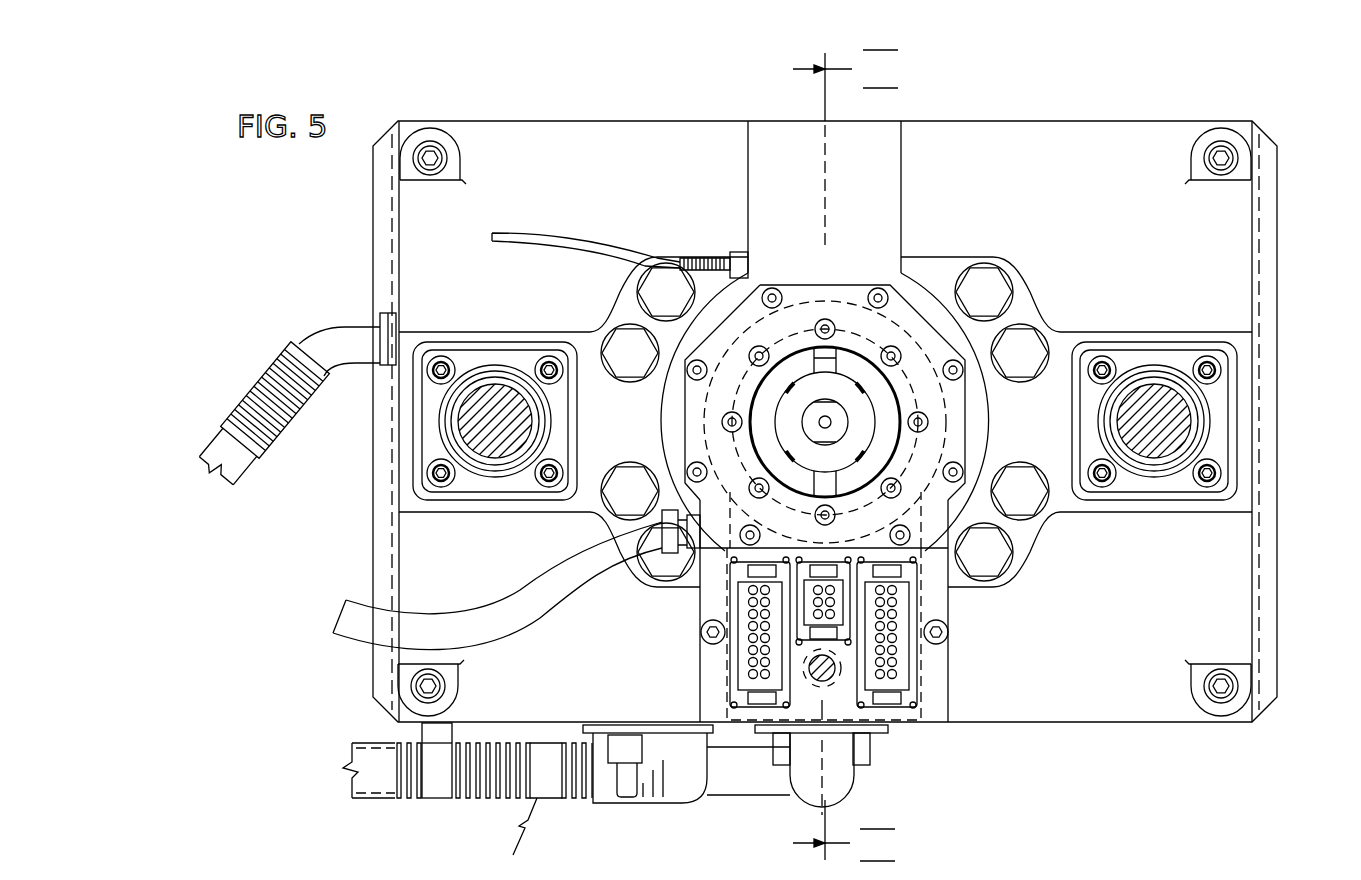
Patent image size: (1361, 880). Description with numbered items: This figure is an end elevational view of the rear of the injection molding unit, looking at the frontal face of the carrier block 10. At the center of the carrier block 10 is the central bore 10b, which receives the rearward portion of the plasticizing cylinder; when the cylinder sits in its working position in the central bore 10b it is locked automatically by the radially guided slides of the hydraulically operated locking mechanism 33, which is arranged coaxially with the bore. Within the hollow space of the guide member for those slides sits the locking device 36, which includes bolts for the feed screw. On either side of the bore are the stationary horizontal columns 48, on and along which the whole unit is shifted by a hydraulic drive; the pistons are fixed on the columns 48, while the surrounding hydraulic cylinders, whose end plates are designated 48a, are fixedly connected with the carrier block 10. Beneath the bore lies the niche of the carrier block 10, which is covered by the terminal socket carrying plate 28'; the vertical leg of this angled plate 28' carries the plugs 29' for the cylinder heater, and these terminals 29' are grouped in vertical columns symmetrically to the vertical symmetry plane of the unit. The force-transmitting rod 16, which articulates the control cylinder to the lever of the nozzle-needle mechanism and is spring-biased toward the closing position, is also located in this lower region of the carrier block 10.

The carrier block 10 is at (1121, 238).
The central bore 10b is at (760, 437).
The force-transmitting rod 16 is at (833, 681).
The terminal socket carrying plate 28' is at (880, 606).
The plugs 29' is at (951, 632).
The locking mechanism 33 is at (896, 435).
The locking device 36 is at (826, 396).
The columns 48 is at (1168, 413).
The end plate 48a is at (498, 358).